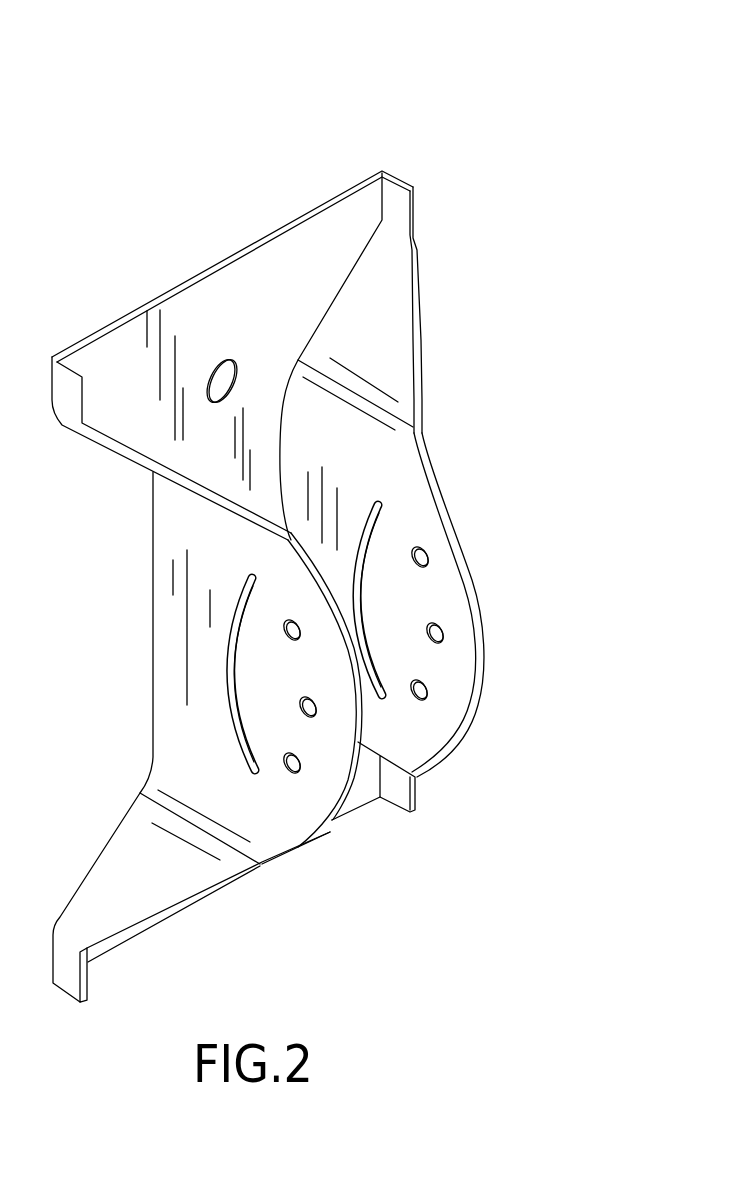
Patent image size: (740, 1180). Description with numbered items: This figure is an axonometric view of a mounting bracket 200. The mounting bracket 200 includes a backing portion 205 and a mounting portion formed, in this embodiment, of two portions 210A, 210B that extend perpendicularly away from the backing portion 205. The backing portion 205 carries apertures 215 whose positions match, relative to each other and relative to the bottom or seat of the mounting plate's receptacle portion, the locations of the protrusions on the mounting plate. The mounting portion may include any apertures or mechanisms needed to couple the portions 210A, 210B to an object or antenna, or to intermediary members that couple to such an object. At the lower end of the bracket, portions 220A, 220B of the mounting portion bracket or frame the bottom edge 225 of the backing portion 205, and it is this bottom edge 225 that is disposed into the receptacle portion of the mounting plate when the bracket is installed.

The mounting bracket 200 is at (465, 95).
The backing portion 205 is at (152, 328).
The apertures 215 is at (230, 357).
The first portion of mounting portion 210A is at (294, 535).
The second portion of mounting portion 210B is at (467, 548).
The first portion of mounting portion bracketing bottom edge 220A is at (90, 980).
The second portion of mounting portion bracketing bottom edge 220B is at (420, 790).
The bottom edge 225 is at (352, 819).